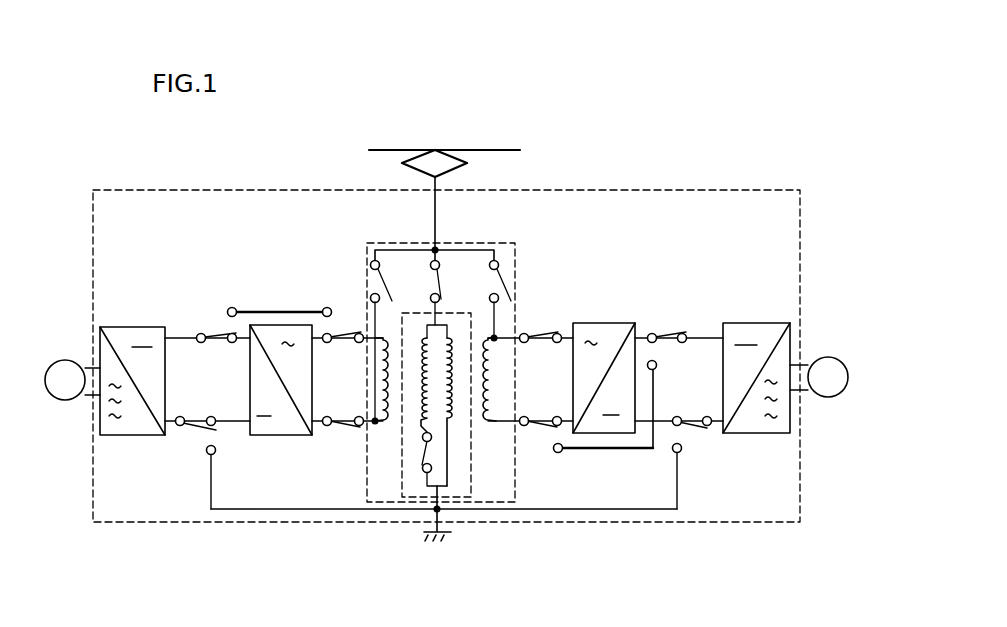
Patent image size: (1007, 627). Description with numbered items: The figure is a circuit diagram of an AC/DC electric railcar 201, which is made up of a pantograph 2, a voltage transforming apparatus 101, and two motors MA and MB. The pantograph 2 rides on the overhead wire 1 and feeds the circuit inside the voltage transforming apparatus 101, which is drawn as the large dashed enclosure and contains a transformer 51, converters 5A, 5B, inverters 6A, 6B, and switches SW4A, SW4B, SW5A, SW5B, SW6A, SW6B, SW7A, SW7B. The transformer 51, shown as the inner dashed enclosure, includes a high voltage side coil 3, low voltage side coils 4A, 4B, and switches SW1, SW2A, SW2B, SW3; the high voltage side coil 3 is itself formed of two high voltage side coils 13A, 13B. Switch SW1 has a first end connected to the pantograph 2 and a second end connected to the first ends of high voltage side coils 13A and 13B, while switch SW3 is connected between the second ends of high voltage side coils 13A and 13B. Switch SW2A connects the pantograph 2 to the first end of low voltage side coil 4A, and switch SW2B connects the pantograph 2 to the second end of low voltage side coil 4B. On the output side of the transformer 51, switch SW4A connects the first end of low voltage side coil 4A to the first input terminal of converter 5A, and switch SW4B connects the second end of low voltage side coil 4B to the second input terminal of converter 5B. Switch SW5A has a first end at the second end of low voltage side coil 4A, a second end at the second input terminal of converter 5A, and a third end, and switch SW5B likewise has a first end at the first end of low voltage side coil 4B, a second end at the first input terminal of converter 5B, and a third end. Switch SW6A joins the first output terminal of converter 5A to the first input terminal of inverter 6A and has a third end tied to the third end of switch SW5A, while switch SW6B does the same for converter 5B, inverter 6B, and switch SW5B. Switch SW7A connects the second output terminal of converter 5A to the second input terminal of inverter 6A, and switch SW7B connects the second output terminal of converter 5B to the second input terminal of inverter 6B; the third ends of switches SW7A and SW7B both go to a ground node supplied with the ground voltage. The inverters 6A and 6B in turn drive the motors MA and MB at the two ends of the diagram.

The overhead wire 1 is at (470, 149).
The pantograph 2 is at (415, 158).
The high voltage side coil 3 is at (410, 497).
The low voltage side coil 4A is at (488, 424).
The low voltage side coil 4B is at (383, 424).
The converter 5A is at (605, 435).
The converter 5B is at (277, 437).
The inverter 6A is at (770, 435).
The inverter 6B is at (125, 437).
The high voltage side coil 13A is at (449, 424).
The high voltage side coil 13B is at (420, 422).
The transformer 51 is at (490, 243).
The voltage transforming apparatus 101 is at (735, 190).
The AC/DC electric railcar 201 is at (781, 108).
The motor MA is at (827, 357).
The motor MB is at (64, 360).
The switch SW1 is at (440, 280).
The switch SW2A is at (505, 280).
The switch SW2B is at (385, 278).
The switch SW3 is at (430, 457).
The switch SW4A is at (543, 333).
The switch SW4B is at (344, 425).
The switch SW5A is at (543, 427).
The switch SW5B is at (346, 328).
The switch SW6A is at (665, 334).
The switch SW6B is at (220, 333).
The switch SW7A is at (690, 430).
The switch SW7B is at (195, 432).